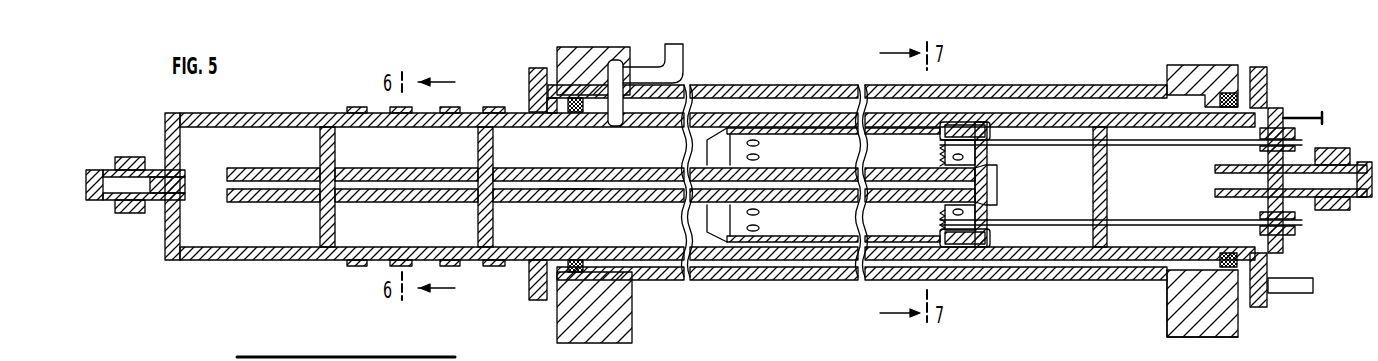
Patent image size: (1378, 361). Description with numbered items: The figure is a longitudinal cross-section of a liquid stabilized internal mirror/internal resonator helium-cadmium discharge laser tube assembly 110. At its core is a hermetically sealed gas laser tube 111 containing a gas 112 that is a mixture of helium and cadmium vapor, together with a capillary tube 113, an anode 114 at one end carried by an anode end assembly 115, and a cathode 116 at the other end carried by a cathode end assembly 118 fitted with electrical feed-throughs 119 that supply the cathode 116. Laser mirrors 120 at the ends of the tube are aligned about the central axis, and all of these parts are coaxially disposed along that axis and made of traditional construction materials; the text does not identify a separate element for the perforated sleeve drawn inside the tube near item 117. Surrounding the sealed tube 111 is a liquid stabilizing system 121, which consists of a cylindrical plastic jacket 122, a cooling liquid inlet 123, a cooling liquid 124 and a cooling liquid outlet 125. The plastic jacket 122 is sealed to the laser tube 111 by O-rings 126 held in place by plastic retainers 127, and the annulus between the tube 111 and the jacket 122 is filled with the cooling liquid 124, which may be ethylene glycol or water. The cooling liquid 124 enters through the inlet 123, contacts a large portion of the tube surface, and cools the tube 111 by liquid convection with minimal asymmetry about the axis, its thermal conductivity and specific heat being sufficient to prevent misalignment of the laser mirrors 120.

The laser tube assembly 110 is at (975, 85).
The hermetically sealed gas laser tube 111 is at (283, 261).
The gas 112 is at (601, 186).
The capillary tube 113 is at (565, 197).
The anode 114 is at (172, 192).
The anode end assembly 115 is at (172, 258).
The cathode 116 is at (1072, 148).
The perforated sleeve 117 is at (797, 134).
The cathode end assembly 118 is at (1283, 110).
The electrical feed-throughs 119 is at (1296, 147).
The laser mirrors 120 is at (97, 168).
The liquid stabilizing system 121 is at (1165, 290).
The cylindrical plastic jacket 122 is at (1077, 84).
The cooling liquid inlet 123 is at (1300, 290).
The cooling liquid 124 is at (790, 262).
The cooling liquid outlet 125 is at (653, 64).
The O-rings 126 is at (576, 270).
The plastic retainers 127 is at (533, 78).